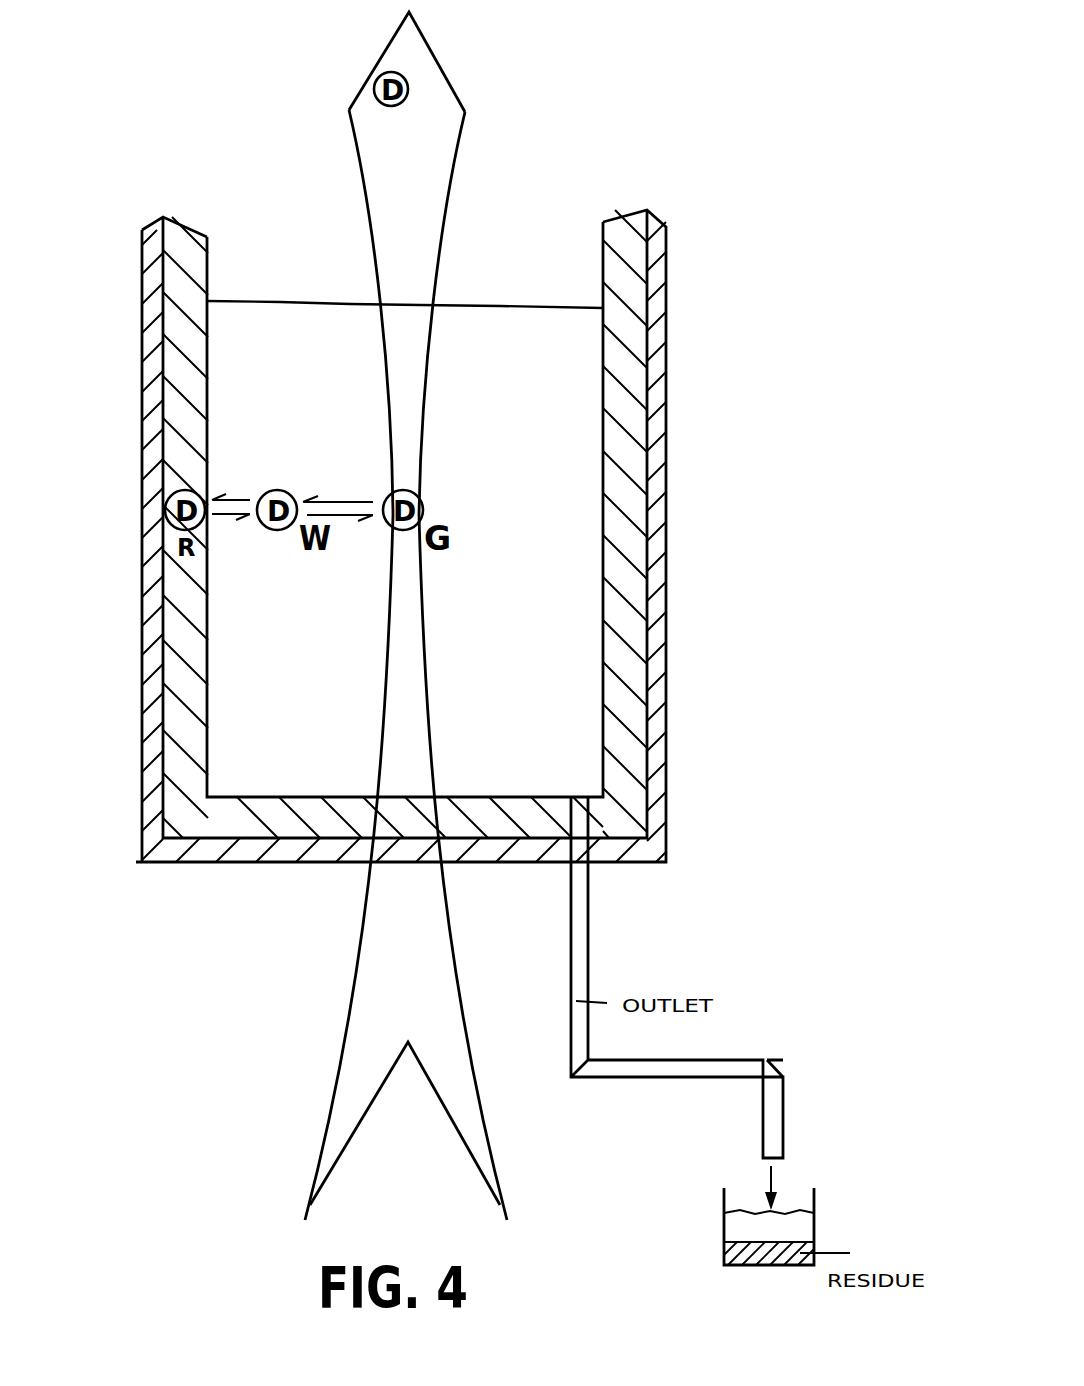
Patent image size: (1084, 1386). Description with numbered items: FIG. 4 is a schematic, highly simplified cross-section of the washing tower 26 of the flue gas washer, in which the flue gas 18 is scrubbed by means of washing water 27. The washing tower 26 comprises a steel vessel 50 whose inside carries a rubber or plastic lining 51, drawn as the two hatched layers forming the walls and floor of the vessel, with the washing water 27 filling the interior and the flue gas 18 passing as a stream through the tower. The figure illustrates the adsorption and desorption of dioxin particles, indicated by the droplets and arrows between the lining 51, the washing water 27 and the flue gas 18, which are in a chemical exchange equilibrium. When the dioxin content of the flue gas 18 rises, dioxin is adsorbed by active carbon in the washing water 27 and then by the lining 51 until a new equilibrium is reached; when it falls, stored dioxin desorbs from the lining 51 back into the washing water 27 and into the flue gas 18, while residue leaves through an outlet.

The washing tower 26 is at (513, 499).
The steel vessel 50 is at (656, 372).
The rubber or plastic lining 51 is at (623, 462).
The washing water 27 is at (557, 547).
The flue gas 18 is at (457, 1055).